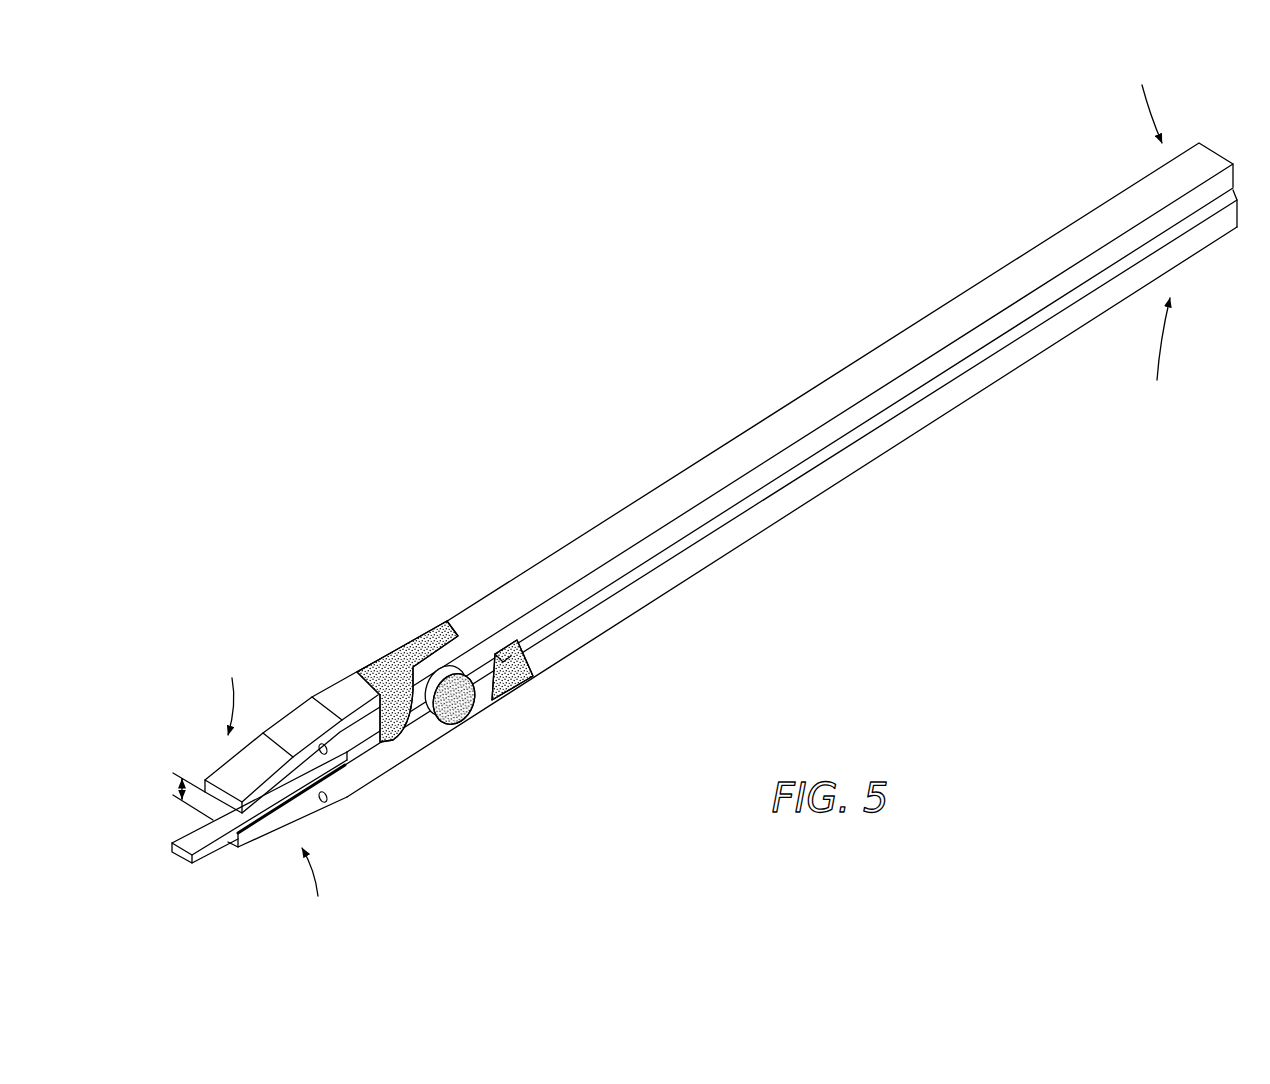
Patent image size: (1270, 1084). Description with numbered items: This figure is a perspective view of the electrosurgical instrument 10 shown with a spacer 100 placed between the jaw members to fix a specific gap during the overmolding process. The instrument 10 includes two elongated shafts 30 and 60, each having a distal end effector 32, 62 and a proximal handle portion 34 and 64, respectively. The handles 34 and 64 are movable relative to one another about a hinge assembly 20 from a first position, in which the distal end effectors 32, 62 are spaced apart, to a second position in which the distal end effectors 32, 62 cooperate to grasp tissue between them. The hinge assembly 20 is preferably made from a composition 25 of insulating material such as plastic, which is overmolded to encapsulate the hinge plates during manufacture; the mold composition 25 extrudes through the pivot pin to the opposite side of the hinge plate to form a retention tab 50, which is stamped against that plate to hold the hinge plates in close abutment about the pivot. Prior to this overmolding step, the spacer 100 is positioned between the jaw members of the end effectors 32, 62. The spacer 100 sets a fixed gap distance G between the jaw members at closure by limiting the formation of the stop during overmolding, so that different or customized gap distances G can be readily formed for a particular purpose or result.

The electrosurgical instrument 10 is at (515, 421).
The hinge assembly 20 is at (399, 627).
The composition 25 is at (374, 663).
The elongated shaft 30 is at (753, 537).
The distal end effector 32 is at (318, 688).
The proximal handle portion 34 is at (990, 386).
The retention tab 50 is at (464, 702).
The elongated shaft 60 is at (776, 423).
The distal end effector 62 is at (363, 792).
The proximal handle portion 64 is at (1092, 217).
The spacer 100 is at (200, 841).
The gap distance G is at (176, 786).